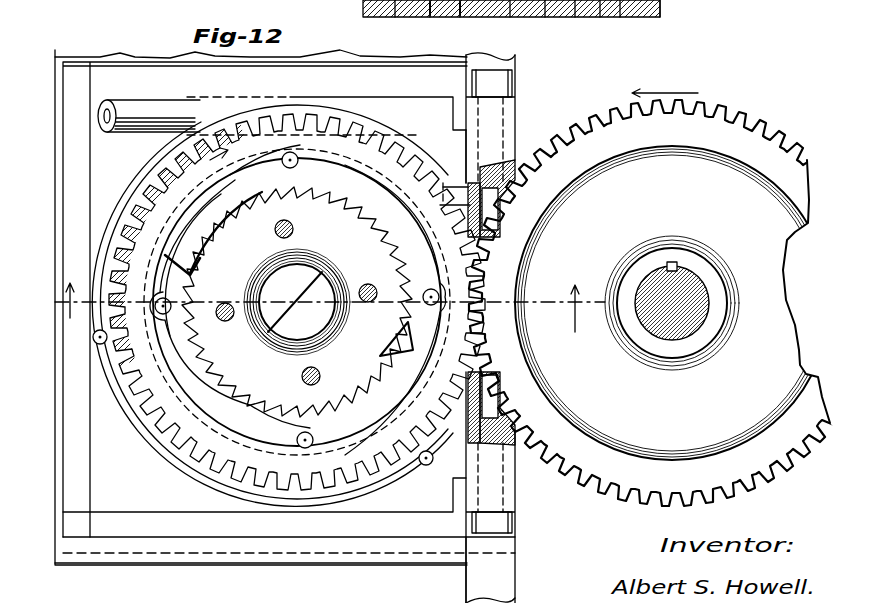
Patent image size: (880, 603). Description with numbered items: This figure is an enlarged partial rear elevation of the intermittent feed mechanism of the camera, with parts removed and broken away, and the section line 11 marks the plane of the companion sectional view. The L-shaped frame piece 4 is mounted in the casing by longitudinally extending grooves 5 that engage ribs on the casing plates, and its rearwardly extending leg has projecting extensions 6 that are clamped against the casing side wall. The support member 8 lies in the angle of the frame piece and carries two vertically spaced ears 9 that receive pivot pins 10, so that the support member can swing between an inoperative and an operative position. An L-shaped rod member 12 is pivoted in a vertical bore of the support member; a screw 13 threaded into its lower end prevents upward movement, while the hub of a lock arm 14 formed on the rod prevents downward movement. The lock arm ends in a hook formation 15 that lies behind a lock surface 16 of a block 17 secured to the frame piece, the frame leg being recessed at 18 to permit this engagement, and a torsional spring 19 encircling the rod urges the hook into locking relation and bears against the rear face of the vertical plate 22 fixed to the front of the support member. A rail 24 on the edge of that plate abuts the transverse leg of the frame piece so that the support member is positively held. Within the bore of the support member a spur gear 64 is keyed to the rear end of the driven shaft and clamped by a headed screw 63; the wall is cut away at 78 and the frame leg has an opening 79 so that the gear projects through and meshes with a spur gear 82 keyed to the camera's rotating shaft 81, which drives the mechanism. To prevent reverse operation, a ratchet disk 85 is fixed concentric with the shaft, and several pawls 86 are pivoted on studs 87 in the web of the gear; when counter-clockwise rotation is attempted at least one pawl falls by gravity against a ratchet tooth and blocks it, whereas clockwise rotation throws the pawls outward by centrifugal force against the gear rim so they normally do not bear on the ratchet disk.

The frame piece 4 is at (130, 547).
The grooves 5 is at (190, 550).
The extensions 6 is at (482, 590).
The support member 8 is at (200, 122).
The ears 9 is at (510, 148).
The pivot pins 10 is at (500, 86).
The section line 11 is at (330, 307).
The rod member 12 is at (127, 107).
The screw 13 is at (410, 430).
The lock arm 14 is at (448, 187).
The hook formation 15 is at (428, 12).
The lock surface 16 is at (462, 12).
The block 17 is at (465, 187).
The recess 18 is at (395, 12).
The torsional spring 19 is at (443, 177).
The plate 22 is at (177, 73).
The rail 24 is at (73, 77).
The headed screw 63 is at (262, 290).
The spur gear 64 is at (190, 418).
The cut away portion 78 is at (533, 180).
The opening 79 is at (500, 213).
The rotating shaft 81 is at (697, 278).
The spur gear 82 is at (757, 137).
The ratchet disk 85 is at (287, 405).
The pawls 86 is at (248, 173).
The studs 87 is at (290, 152).